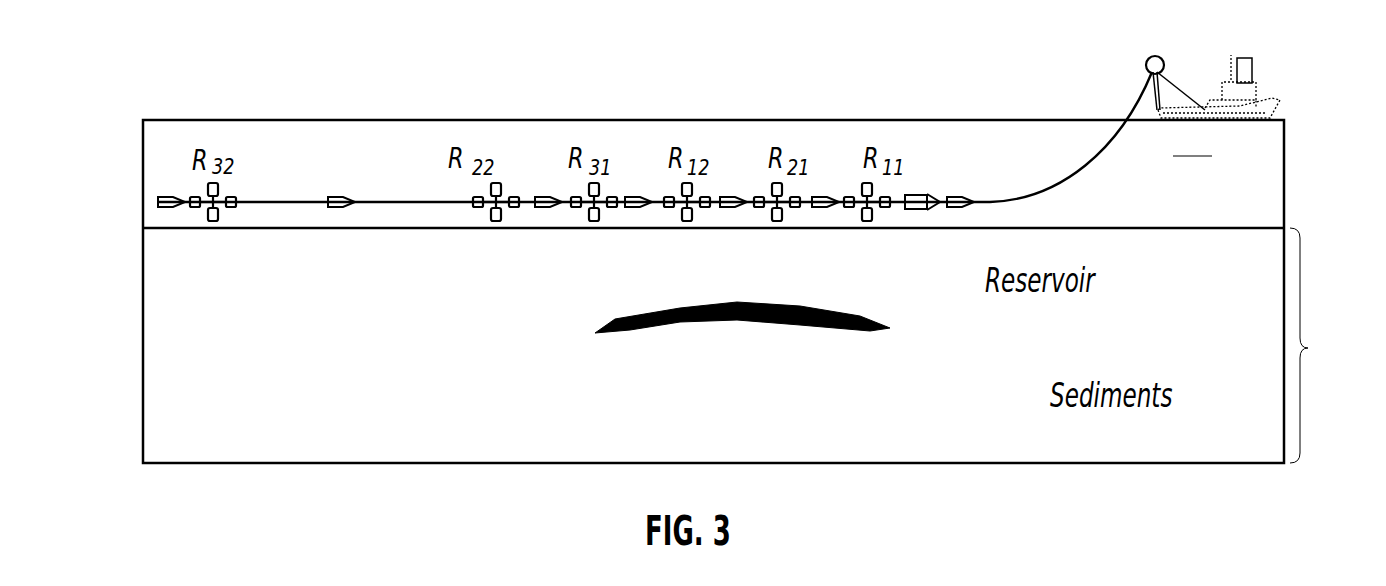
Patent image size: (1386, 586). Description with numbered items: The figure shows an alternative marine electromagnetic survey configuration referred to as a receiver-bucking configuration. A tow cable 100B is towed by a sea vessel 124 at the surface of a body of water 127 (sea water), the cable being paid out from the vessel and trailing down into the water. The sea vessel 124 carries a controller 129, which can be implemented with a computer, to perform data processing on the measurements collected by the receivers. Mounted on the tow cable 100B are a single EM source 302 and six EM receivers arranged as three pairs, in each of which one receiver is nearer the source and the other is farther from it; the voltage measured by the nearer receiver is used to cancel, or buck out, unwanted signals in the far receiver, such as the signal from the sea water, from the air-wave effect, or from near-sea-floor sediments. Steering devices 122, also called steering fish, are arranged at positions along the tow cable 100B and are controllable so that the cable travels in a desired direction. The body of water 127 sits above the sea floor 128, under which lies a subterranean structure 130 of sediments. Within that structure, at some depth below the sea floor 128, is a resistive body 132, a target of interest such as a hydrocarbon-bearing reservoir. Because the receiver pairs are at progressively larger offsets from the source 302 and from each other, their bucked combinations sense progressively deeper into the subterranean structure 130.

The tow cable 100B is at (661, 105).
The steering device 122 is at (640, 146).
The sea vessel 124 is at (1248, 86).
The body of water 127 is at (1191, 171).
The sea floor 128 is at (755, 203).
The controller 129 is at (1279, 59).
The subterranean structure 130 is at (1321, 345).
The resistive body 132 is at (742, 403).
The EM source 302 is at (944, 136).